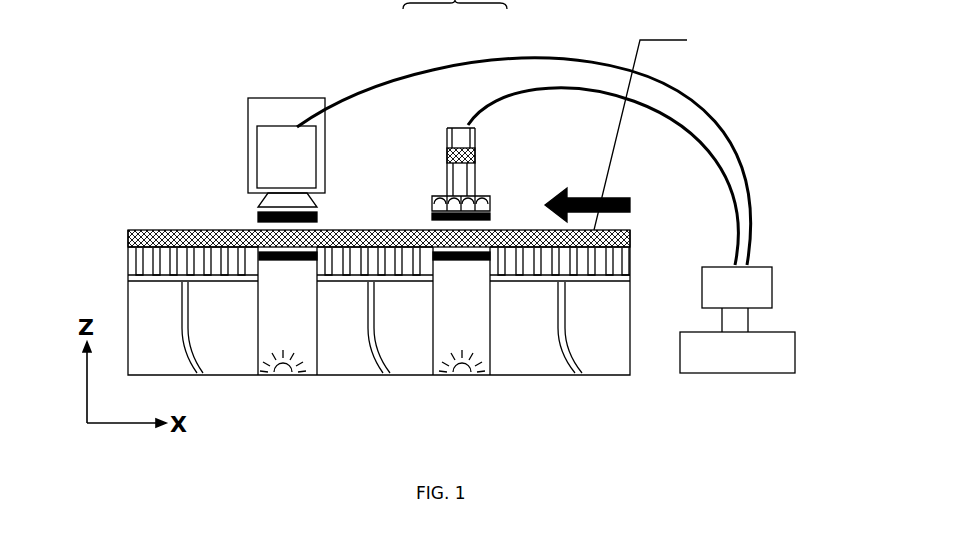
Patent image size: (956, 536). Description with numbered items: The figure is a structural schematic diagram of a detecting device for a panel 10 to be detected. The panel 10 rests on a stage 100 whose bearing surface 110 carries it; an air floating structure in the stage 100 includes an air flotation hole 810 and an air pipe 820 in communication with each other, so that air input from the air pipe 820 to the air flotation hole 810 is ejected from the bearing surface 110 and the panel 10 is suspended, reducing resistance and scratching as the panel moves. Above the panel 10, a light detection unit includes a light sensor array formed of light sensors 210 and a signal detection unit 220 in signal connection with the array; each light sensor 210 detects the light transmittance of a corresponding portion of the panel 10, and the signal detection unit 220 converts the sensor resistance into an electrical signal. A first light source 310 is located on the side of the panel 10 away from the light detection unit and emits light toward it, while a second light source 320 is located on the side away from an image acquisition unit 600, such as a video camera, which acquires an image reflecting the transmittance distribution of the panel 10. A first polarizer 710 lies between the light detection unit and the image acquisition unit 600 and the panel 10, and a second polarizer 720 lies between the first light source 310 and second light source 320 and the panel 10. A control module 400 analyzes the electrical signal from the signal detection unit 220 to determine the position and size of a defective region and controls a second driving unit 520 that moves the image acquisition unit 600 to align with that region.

The panel to be detected 10 is at (163, 230).
The stage 100 is at (617, 193).
The bearing surface 110 is at (240, 231).
The light sensor 210 is at (470, 128).
The signal detection unit 220 is at (450, 128).
The first light source 310 is at (466, 368).
The second light source 320 is at (268, 362).
The control module 400 is at (742, 292).
The second driving unit 520 is at (282, 112).
The image acquisition unit 600 is at (277, 157).
The first polarizer 710 is at (475, 197).
The second polarizer 720 is at (288, 259).
The air flotation hole 810 is at (148, 256).
The air pipe 820 is at (187, 330).